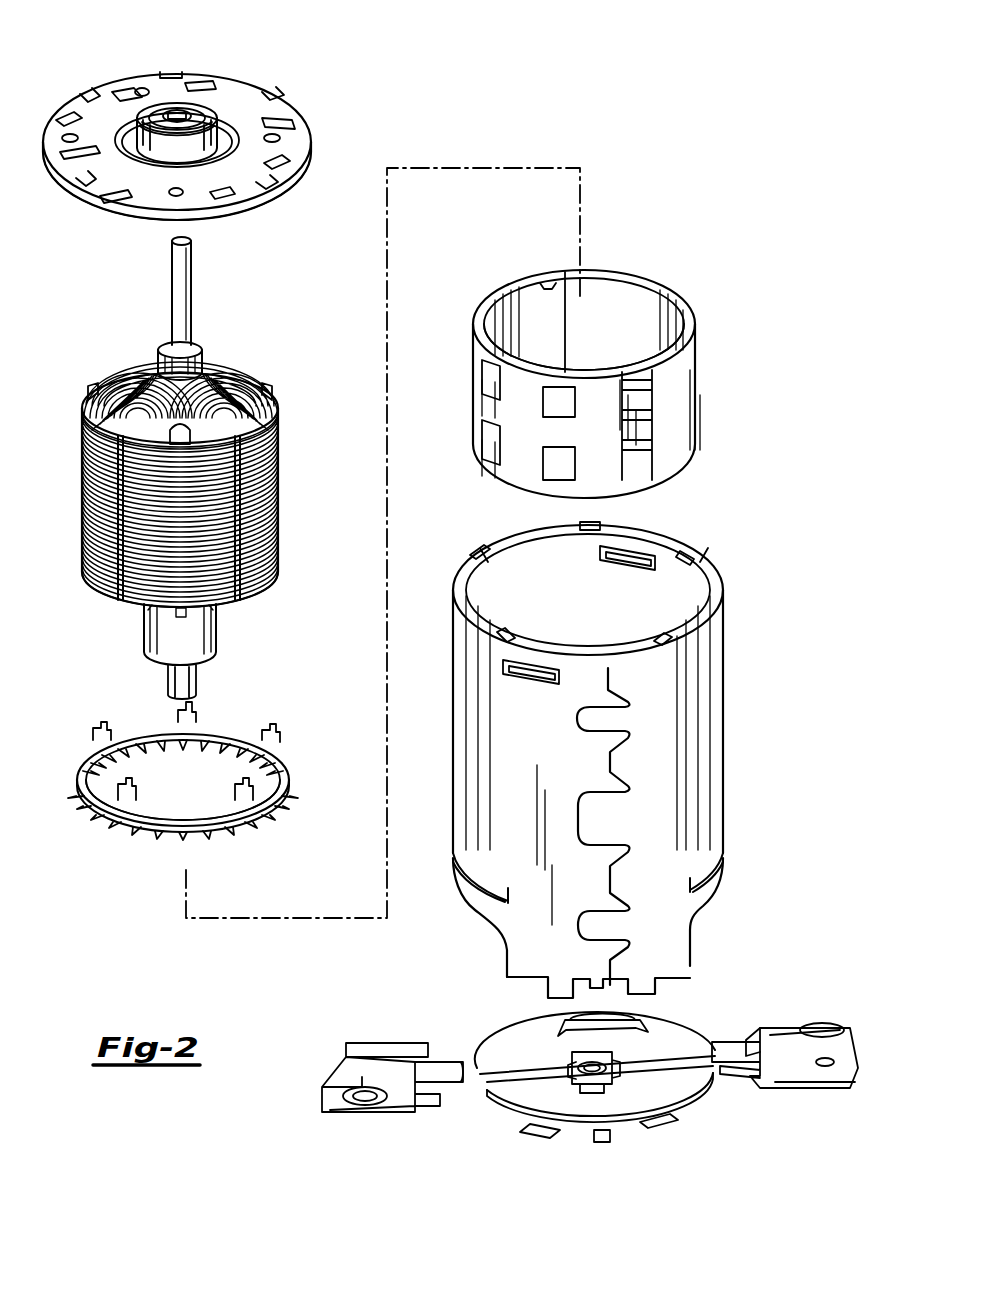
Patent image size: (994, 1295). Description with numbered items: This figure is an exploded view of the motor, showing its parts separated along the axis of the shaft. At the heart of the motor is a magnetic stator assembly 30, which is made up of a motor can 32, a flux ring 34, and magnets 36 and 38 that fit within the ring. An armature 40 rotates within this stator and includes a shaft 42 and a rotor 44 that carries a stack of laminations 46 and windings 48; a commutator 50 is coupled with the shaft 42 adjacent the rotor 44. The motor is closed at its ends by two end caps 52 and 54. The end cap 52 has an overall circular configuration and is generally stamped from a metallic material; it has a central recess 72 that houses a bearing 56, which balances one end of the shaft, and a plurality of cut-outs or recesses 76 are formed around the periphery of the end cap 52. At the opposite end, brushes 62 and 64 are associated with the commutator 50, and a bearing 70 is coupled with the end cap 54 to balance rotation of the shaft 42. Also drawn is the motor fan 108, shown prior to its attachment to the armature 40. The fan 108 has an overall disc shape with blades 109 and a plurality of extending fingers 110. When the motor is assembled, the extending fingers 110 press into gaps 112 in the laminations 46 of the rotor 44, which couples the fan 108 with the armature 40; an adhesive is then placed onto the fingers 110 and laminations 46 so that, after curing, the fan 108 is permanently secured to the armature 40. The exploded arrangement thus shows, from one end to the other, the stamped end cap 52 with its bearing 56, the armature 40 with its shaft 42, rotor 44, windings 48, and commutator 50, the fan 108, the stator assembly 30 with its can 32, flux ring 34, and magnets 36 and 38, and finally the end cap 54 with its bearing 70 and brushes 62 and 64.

The magnetic stator assembly 30 is at (603, 382).
The motor can 32 is at (660, 562).
The flux ring 34 is at (553, 382).
The magnet 36 is at (552, 455).
The magnet 38 is at (660, 325).
The armature 40 is at (196, 468).
The shaft 42 is at (193, 278).
The rotor 44 is at (188, 500).
The laminations 46 is at (266, 546).
The windings 48 is at (218, 373).
The commutator 50 is at (217, 645).
The end cap 52 is at (262, 78).
The end cap 54 is at (682, 1106).
The bearing 56 is at (183, 108).
The brush 62 is at (400, 1100).
The brush 64 is at (808, 1078).
The bearing 70 is at (578, 1066).
The central recess 72 is at (166, 108).
The cut-outs or recesses 76 is at (85, 97).
The motor fan 108 is at (196, 797).
The blades 109 is at (225, 748).
The extending fingers 110 is at (183, 716).
The gaps 112 is at (120, 602).